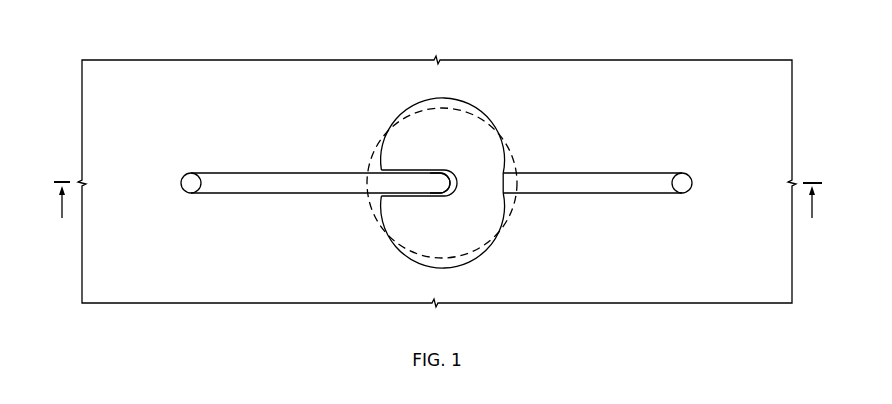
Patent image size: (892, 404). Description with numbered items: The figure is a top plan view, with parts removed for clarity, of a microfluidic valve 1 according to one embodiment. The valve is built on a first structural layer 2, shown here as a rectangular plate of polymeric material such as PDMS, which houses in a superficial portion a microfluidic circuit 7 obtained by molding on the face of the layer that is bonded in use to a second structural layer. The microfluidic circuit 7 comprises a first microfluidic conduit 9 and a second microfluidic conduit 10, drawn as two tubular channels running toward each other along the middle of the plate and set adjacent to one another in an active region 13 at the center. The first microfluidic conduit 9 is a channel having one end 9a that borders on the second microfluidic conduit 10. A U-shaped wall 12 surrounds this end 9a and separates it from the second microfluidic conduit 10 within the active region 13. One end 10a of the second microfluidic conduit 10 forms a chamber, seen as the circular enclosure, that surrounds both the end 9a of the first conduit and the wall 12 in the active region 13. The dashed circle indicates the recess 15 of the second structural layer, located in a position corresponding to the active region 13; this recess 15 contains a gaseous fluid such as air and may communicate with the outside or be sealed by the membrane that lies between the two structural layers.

The microfluidic valve 1 is at (733, 44).
The first structural layer 2 is at (156, 83).
The microfluidic circuit 7 is at (300, 146).
The first microfluidic conduit 9 is at (250, 173).
The end of the first microfluidic conduit 9a is at (420, 203).
The second microfluidic conduit 10 is at (620, 193).
The end of the second microfluidic conduit 10a is at (527, 162).
The wall 12 is at (418, 170).
The active region 13 is at (478, 122).
The recess 15 is at (498, 238).